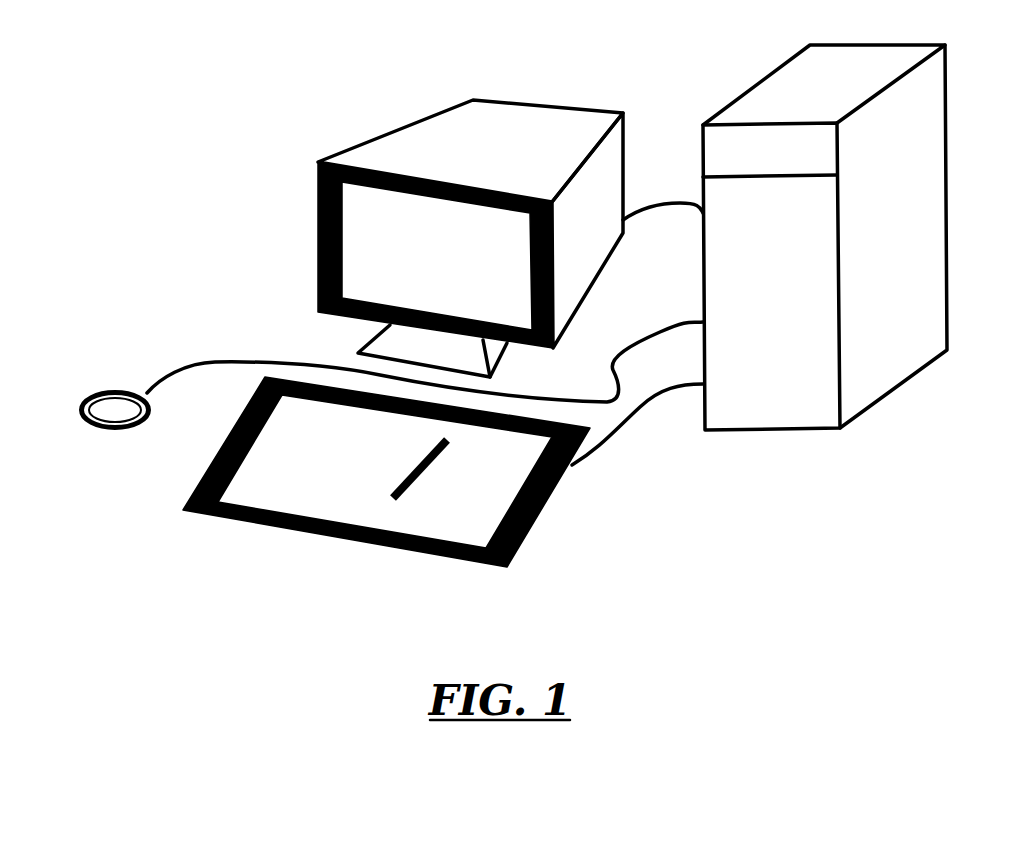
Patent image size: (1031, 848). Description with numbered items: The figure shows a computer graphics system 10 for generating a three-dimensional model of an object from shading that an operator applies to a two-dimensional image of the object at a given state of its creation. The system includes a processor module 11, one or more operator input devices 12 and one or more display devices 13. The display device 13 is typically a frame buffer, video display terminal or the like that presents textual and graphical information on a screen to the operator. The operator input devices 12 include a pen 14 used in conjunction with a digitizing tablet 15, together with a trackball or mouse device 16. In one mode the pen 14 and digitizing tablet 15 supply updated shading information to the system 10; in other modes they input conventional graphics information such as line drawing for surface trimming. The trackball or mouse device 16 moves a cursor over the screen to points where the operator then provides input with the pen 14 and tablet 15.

The computer graphics system 10 is at (222, 133).
The processor module 11 is at (950, 288).
The operator input devices 12 is at (175, 560).
The display device 13 is at (537, 102).
The pen 14 is at (400, 500).
The digitizing tablet 15 is at (530, 532).
The trackball or mouse device 16 is at (102, 388).